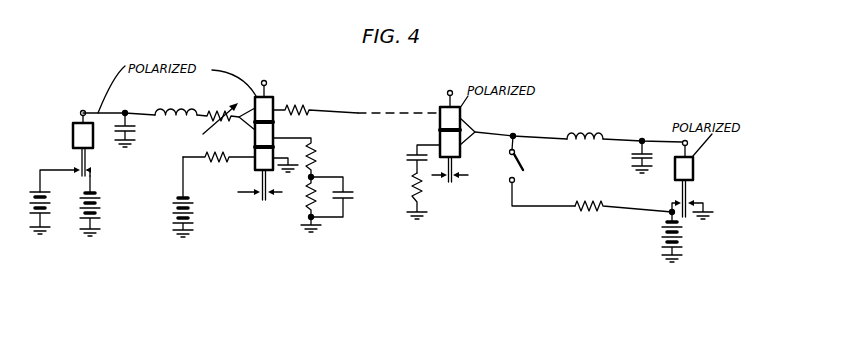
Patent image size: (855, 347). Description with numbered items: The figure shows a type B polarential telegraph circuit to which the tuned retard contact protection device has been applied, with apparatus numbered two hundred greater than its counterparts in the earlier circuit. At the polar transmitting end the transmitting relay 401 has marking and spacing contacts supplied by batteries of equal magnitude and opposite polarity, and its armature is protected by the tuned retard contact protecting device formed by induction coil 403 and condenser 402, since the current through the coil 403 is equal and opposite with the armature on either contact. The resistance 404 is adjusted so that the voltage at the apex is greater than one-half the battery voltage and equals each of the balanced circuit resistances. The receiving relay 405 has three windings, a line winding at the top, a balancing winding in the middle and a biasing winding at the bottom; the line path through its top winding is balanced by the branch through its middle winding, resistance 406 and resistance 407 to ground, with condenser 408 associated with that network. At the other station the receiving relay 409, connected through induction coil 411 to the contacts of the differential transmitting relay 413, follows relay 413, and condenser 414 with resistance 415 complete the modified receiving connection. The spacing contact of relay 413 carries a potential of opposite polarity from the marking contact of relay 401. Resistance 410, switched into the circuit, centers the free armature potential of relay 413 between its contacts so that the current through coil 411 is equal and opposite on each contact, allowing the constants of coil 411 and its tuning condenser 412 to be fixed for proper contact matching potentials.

The polar transmitting relay 401 is at (73, 137).
The condenser 402 is at (136, 131).
The induction coil 403 is at (188, 109).
The resistance 404 is at (218, 111).
The receiving relay 405 is at (268, 104).
The resistance 406 is at (318, 159).
The resistance 407 is at (304, 204).
The condenser 408 is at (350, 199).
The receiving relay 409 is at (440, 127).
The resistance 410 is at (586, 203).
The induction coil 411 is at (601, 132).
The condenser 412 is at (631, 158).
The differential transmitting relay 413 is at (694, 169).
The condenser 414 is at (410, 157).
The resistance 415 is at (412, 186).